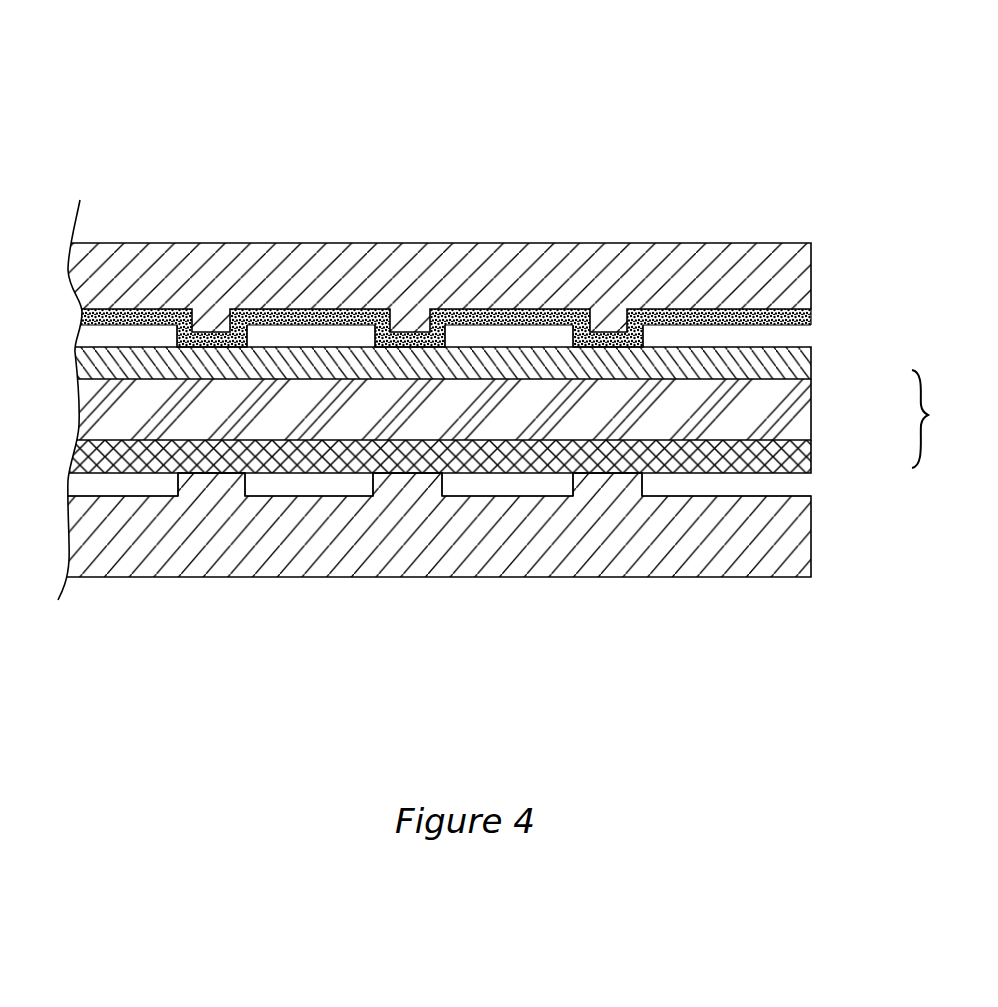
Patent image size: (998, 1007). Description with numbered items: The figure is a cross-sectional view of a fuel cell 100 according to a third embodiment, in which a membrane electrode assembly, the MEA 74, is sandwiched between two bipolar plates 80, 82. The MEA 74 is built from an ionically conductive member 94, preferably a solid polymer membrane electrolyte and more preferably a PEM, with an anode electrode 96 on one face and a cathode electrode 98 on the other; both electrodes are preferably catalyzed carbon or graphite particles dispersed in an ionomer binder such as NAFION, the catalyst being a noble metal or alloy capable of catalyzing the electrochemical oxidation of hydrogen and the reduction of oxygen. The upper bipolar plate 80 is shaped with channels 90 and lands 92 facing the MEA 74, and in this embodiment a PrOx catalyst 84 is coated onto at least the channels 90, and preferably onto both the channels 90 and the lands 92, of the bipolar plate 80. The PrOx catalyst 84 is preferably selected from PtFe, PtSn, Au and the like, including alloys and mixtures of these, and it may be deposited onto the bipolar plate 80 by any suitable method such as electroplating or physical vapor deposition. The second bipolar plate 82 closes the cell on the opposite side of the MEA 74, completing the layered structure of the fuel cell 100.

The fuel cell 100 is at (780, 96).
The bipolar plate 80 is at (703, 257).
The PrOx catalyst 84 is at (811, 313).
The lands 92 is at (410, 338).
The channels 90 is at (515, 333).
The anode electrode 96 is at (811, 370).
The ionically conductive member 94 is at (811, 415).
The cathode electrode 98 is at (811, 456).
The MEA 74 is at (941, 419).
The bipolar plate 82 is at (714, 561).